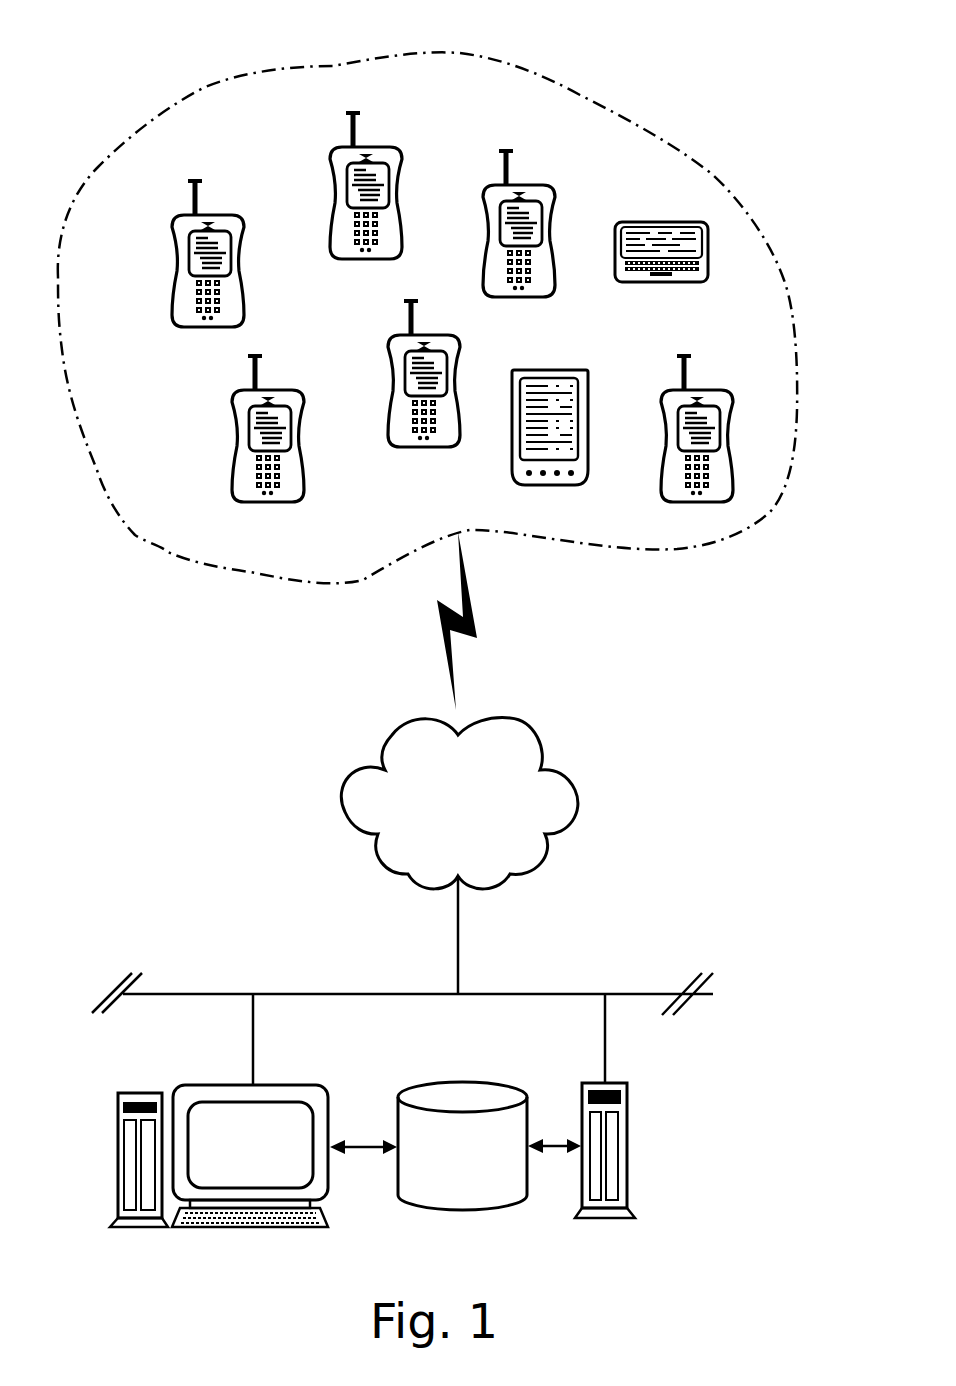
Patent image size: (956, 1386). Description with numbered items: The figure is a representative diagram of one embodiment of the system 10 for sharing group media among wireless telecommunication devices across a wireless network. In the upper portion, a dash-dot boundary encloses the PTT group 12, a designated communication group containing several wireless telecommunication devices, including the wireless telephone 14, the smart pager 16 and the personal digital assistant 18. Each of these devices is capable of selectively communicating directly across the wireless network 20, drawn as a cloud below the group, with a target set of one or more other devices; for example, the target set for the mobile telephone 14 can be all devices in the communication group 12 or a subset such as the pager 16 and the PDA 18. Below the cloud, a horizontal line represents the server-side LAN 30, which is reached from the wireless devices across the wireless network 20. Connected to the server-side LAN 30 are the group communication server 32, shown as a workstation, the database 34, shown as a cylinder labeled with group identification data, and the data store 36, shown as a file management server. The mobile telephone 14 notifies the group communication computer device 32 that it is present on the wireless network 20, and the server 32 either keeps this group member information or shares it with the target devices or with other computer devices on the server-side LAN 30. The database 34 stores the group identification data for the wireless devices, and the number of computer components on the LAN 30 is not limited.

The system 10 is at (728, 84).
The PTT group 12 is at (127, 563).
The wireless telephone 14 is at (392, 147).
The smart pager 16 is at (668, 283).
The personal digital assistant 18 is at (512, 448).
The wireless network 20 is at (577, 806).
The server-side LAN 30 is at (215, 993).
The group communication server 32 is at (218, 1085).
The database 34 is at (382, 1177).
The data store 36 is at (627, 1190).